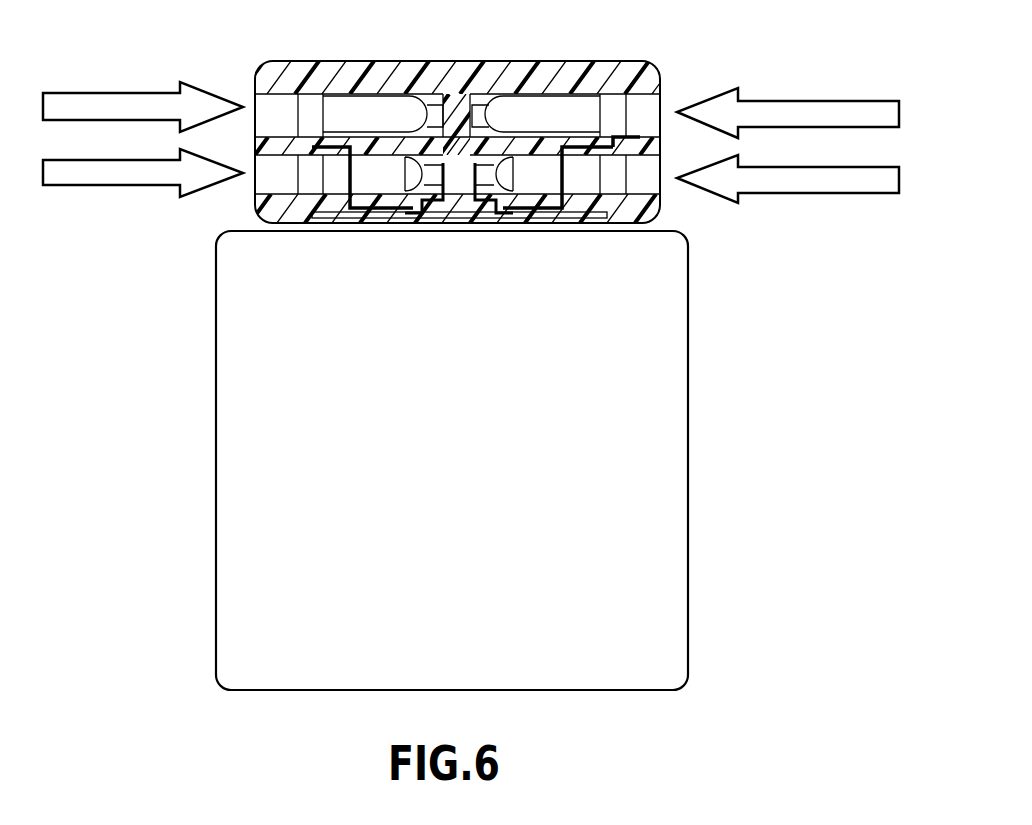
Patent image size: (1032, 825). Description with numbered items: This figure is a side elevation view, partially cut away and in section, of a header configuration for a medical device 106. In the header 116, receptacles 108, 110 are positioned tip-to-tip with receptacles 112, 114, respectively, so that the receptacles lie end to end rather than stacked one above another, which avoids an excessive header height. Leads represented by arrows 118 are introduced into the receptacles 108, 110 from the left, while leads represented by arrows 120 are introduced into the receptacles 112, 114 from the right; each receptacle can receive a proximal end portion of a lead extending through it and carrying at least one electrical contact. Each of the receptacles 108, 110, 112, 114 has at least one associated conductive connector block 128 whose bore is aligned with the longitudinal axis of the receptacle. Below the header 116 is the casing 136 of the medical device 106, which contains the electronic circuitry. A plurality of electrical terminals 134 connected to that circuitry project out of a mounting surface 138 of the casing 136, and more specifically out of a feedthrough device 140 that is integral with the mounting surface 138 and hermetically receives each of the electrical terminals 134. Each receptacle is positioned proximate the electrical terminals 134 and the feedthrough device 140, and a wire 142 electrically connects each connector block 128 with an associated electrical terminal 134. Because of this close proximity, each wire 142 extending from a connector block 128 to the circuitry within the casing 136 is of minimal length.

The medical device 106 is at (192, 390).
The receptacle 108 is at (375, 98).
The receptacle 110 is at (268, 200).
The receptacle 112 is at (565, 98).
The receptacle 114 is at (607, 208).
The header 116 is at (446, 92).
The leads (arrows) 118 is at (83, 177).
The leads (arrows) 120 is at (833, 180).
The conductive connector block 128 is at (297, 187).
The electrical terminals 134 is at (452, 212).
The casing 136 is at (232, 493).
The mounting surface 138 is at (250, 229).
The feedthrough device 140 is at (472, 210).
The wire 142 is at (372, 210).